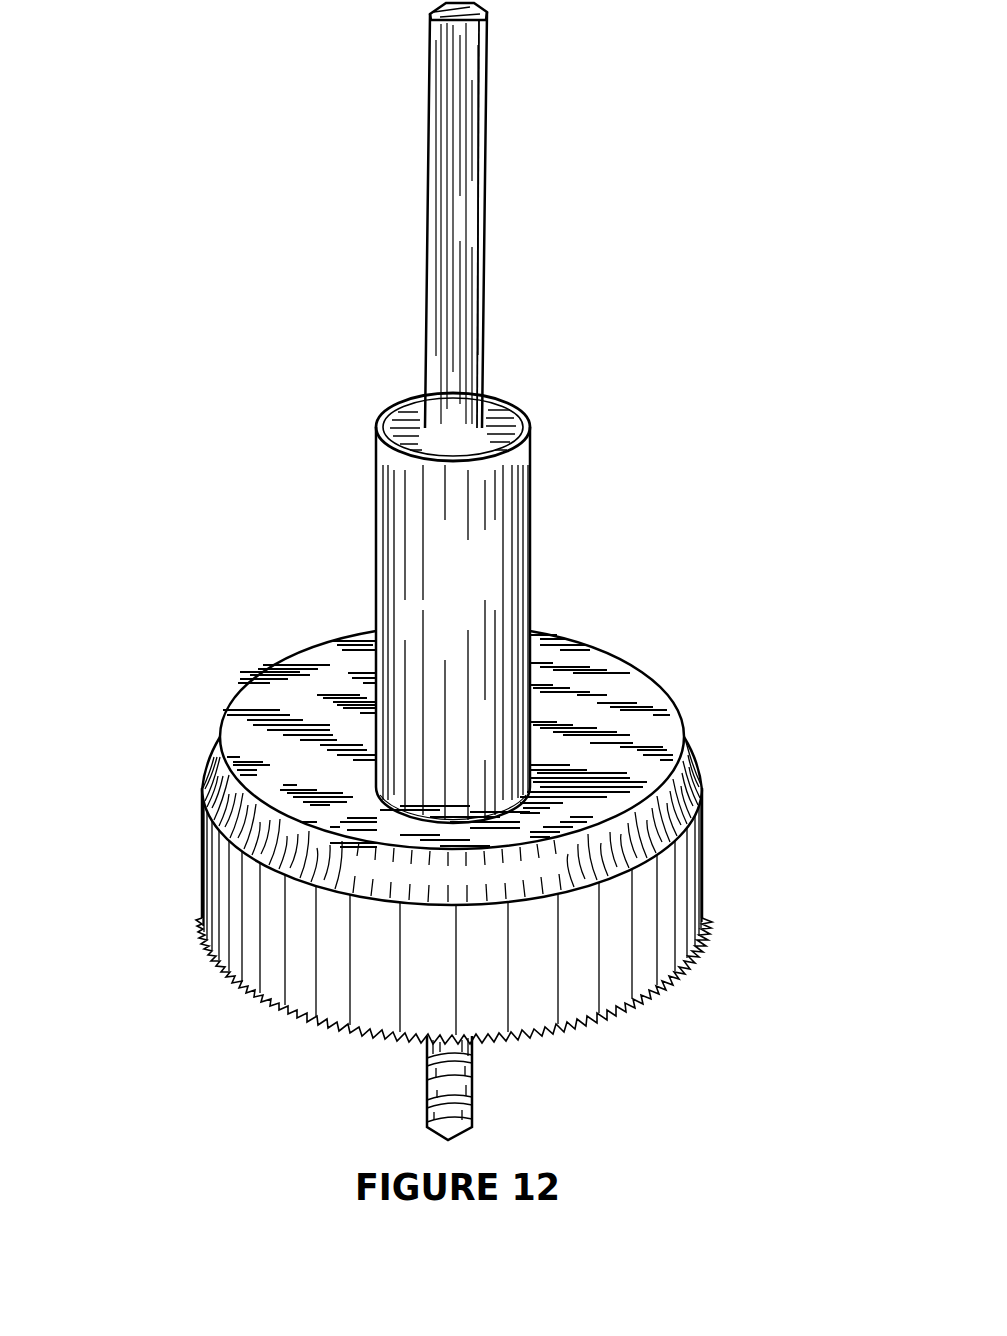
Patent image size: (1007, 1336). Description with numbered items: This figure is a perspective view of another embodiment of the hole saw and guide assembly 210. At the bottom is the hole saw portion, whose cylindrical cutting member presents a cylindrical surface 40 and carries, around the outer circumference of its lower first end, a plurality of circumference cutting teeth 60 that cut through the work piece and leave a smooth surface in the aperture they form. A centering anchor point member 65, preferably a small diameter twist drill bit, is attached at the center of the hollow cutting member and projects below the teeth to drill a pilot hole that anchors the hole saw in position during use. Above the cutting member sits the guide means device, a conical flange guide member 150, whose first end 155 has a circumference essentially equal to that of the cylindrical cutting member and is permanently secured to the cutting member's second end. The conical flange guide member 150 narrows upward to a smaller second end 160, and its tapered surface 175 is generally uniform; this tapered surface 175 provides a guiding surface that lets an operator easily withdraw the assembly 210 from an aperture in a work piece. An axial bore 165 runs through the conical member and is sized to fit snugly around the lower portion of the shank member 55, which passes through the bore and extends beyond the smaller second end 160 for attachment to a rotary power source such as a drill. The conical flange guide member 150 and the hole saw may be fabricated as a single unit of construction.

The hole saw and guide assembly 210 is at (622, 375).
The shank member 55 is at (477, 230).
The conical flange guide member 150 is at (190, 713).
The smaller second end 160 is at (316, 668).
The axial bore 165 is at (515, 780).
The tapered surface 175 is at (203, 793).
The first end 155 is at (203, 850).
The cylindrical surface 40 is at (250, 915).
The circumference cutting teeth 60 is at (272, 993).
The centering anchor point member 65 is at (468, 1112).